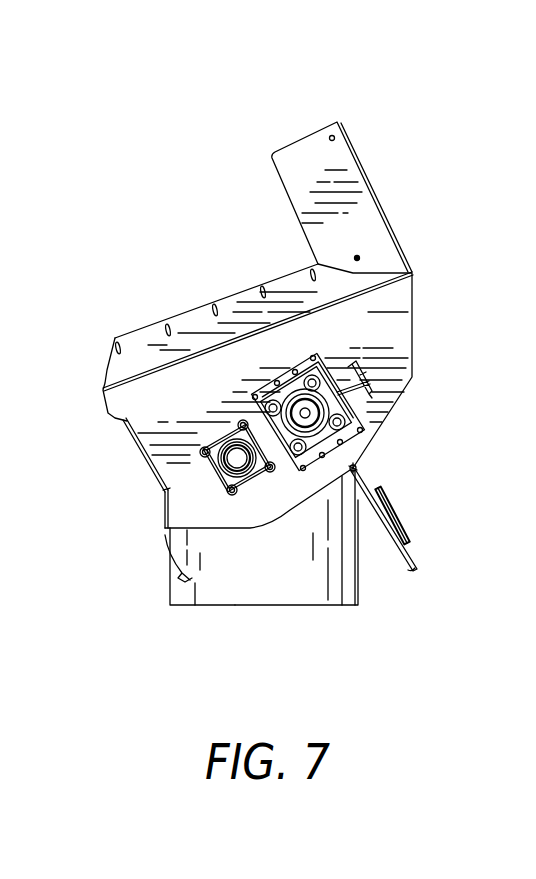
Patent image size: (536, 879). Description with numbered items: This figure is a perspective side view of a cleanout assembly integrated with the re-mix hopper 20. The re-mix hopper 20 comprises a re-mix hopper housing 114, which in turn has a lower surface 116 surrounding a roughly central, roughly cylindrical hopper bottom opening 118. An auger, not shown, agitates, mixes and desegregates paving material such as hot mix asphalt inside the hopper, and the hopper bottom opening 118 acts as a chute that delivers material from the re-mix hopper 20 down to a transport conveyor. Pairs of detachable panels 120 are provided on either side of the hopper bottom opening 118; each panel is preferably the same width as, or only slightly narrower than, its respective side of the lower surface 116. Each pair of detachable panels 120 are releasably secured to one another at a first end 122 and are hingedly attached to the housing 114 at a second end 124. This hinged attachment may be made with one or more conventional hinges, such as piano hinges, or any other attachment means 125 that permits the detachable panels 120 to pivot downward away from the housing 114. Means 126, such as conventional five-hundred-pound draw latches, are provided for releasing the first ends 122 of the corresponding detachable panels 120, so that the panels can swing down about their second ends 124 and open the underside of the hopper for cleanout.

The re-mix hopper 20 is at (178, 176).
The re-mix hopper housing 114 is at (368, 313).
The lower surface 116 is at (220, 530).
The hopper bottom opening 118 is at (282, 543).
The detachable panels 120 is at (172, 563).
The first end 122 is at (193, 603).
The second end 124 is at (168, 538).
The attachment means 125 is at (358, 462).
The means for releasing 126 is at (406, 527).